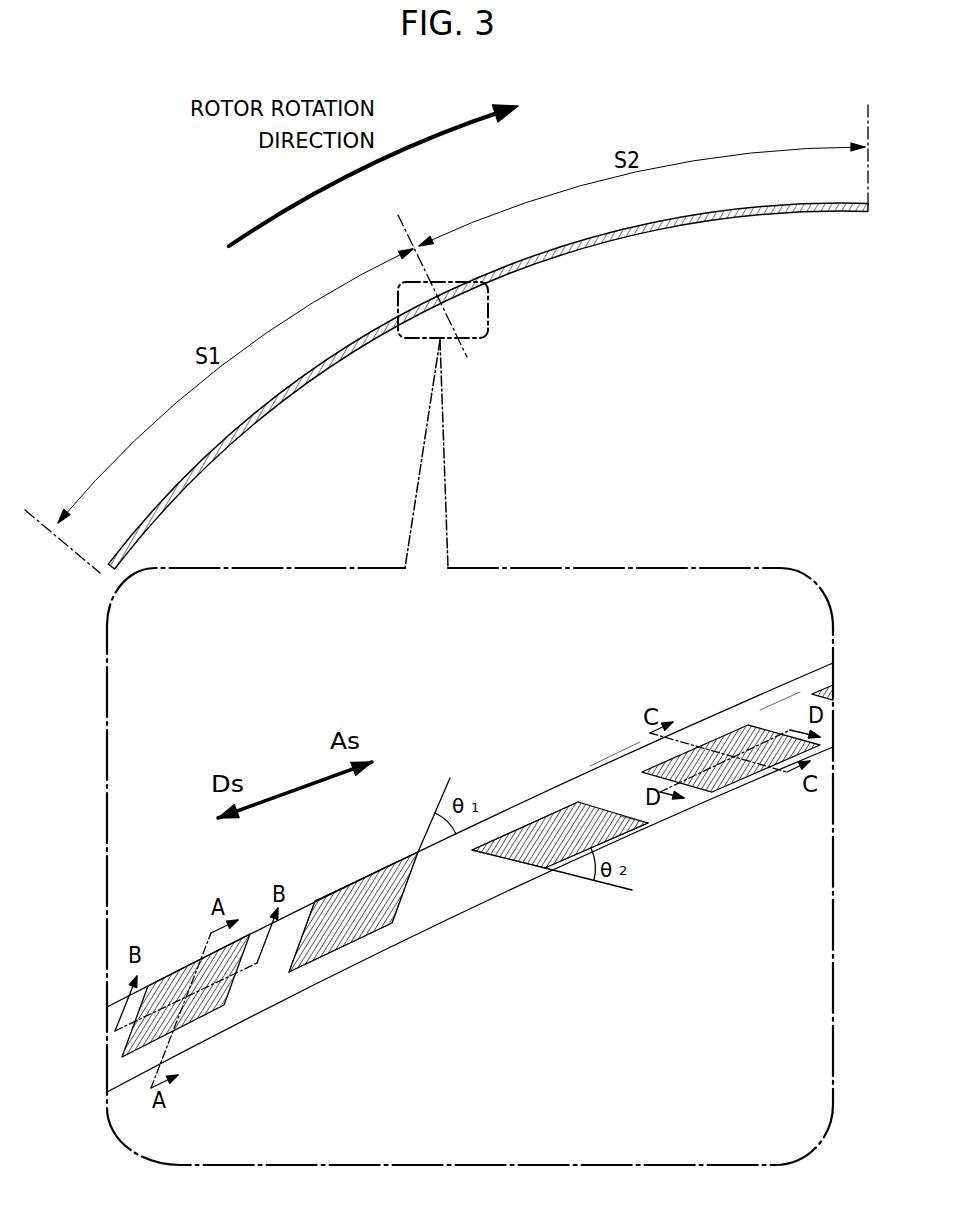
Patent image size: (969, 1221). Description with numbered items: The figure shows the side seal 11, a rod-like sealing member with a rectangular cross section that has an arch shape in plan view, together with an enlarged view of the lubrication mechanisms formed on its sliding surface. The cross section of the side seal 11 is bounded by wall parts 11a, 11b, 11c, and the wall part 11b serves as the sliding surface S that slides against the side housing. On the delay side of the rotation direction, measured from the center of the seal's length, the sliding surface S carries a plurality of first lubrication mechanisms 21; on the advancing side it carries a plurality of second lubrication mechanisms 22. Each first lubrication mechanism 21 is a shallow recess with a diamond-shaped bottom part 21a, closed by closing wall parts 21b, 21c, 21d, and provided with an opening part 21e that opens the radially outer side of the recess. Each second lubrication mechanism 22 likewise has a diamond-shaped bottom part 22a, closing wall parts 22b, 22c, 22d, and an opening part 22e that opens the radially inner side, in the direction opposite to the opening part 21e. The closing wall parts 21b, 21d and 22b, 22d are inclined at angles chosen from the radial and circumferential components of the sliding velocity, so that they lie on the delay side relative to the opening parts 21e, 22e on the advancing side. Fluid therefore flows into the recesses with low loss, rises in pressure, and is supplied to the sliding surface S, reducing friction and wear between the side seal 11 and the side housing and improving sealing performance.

The side seal 11 is at (712, 250).
The wall part 11a is at (705, 720).
The wall part 11b is at (616, 760).
The wall part 11c is at (455, 920).
The sliding surface S is at (776, 695).
The first lubrication mechanism 21 is at (382, 330).
The bottom part 21a is at (356, 885).
The closing wall part 21b is at (388, 918).
The closing wall part 21c is at (341, 940).
The closing wall part 21d is at (302, 948).
The opening part 21e is at (335, 892).
The second lubrication mechanism 22 is at (537, 270).
The bottom part 22a is at (606, 846).
The closing wall part 22b is at (642, 825).
The closing wall part 22c is at (532, 824).
The closing wall part 22d is at (515, 862).
The opening part 22e is at (625, 834).